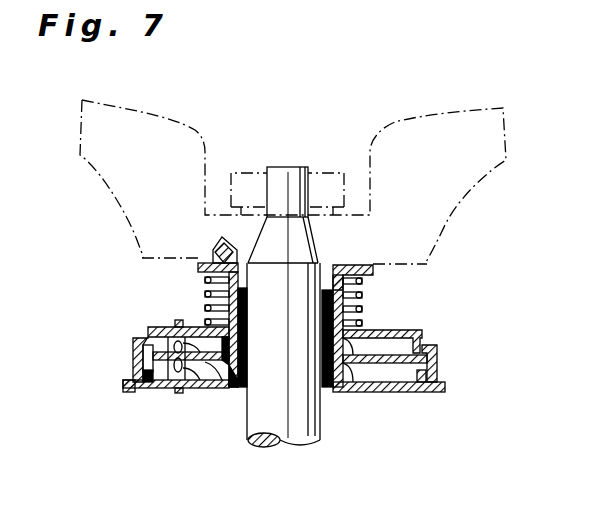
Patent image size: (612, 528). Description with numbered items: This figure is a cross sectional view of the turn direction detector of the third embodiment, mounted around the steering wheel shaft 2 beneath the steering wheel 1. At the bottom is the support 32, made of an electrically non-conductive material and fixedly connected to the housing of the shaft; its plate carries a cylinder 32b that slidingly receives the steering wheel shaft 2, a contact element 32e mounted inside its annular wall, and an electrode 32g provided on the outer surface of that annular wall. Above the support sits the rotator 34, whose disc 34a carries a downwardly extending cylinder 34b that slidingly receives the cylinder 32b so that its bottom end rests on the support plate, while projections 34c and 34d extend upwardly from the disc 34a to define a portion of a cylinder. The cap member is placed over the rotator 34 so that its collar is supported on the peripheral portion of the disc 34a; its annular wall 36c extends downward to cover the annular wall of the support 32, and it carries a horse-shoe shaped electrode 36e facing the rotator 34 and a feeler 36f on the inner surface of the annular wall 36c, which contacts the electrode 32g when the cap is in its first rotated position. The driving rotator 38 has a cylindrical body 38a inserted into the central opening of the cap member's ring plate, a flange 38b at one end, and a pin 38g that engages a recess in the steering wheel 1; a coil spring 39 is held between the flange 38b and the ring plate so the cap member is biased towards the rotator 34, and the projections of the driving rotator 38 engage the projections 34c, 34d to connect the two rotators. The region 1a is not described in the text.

The steering wheel 1 is at (419, 137).
The hole in body 1a is at (218, 253).
The steering wheel shaft 2 is at (300, 437).
The support 32 is at (432, 393).
The cylinder 32b is at (348, 373).
The contact element 32e is at (172, 393).
The electrode 32g is at (137, 390).
The rotator 34 is at (437, 354).
The disc 34a is at (433, 367).
The cylinder 34b is at (237, 390).
The projection 34c is at (218, 392).
The projection 34d is at (202, 392).
The annular wall 36c is at (136, 365).
The horse-shoe shaped electrode 36e is at (178, 322).
The feeler 36f is at (142, 366).
The driving rotator 38 is at (368, 264).
The cylindrical body 38a is at (365, 292).
The flange 38b is at (198, 265).
The pin 38g is at (220, 253).
The coil spring 39 is at (365, 307).